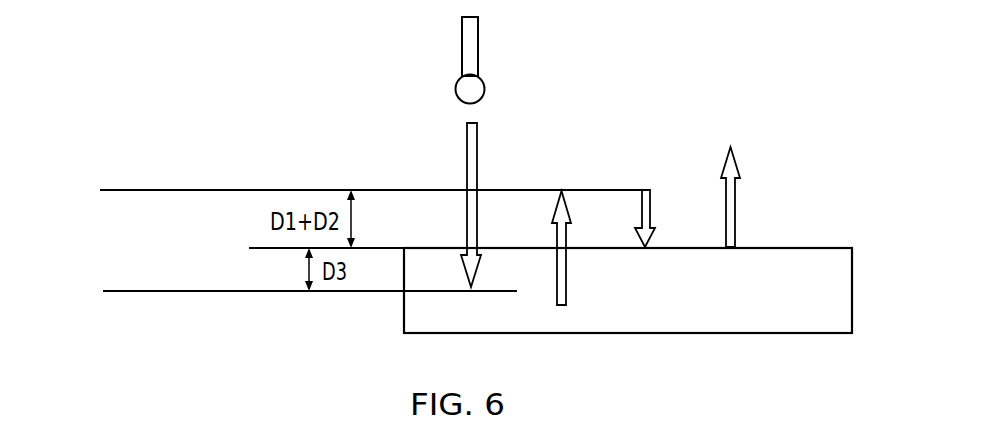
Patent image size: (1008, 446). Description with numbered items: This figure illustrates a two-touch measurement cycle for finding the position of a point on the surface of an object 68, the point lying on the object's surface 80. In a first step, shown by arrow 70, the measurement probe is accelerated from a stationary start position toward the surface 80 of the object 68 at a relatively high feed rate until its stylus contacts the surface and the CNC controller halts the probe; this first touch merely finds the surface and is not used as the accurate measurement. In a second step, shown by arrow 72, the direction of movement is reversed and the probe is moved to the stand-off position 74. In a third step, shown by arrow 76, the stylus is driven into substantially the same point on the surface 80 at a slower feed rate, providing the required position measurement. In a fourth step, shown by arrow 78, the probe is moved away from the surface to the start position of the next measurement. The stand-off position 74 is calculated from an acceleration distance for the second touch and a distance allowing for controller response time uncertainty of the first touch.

The object 68 is at (760, 306).
The arrow illustrating the first step 70 is at (480, 148).
The arrow illustrating the second step 72 is at (569, 292).
The stand-off position 74 is at (88, 189).
The arrow illustrating the third step 76 is at (652, 213).
The arrow illustrating the fourth step 78 is at (736, 212).
The substrate surface 80 is at (842, 240).